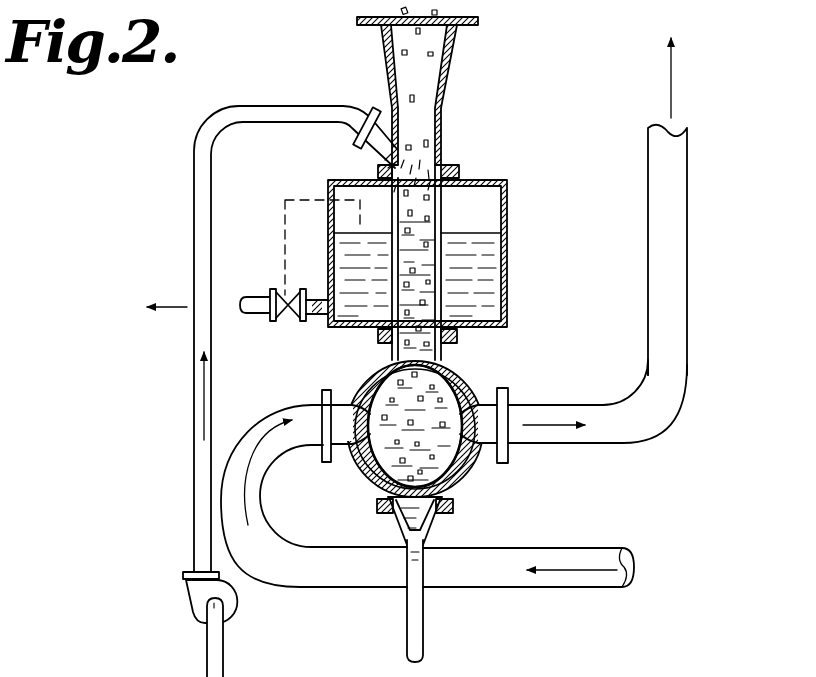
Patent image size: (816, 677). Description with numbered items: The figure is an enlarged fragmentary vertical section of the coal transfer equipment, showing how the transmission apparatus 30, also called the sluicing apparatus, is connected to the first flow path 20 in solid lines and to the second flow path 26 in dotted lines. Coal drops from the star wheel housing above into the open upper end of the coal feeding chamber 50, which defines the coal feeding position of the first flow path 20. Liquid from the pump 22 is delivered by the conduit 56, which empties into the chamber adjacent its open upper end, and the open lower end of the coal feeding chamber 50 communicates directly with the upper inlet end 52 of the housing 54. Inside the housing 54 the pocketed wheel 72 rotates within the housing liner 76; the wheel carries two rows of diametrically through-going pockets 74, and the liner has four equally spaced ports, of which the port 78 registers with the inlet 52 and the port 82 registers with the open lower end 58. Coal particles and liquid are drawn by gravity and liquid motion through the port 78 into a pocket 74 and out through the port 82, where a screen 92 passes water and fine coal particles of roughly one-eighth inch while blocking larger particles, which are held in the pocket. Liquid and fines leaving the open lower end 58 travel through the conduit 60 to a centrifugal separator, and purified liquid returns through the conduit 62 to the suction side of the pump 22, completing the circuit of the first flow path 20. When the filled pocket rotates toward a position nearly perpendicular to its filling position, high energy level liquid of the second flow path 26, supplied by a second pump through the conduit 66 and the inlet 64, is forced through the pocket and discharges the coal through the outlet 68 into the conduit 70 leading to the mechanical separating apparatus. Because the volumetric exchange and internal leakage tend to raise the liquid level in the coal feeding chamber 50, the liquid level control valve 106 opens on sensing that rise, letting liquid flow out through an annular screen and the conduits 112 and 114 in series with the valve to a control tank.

The first flow path 20 is at (192, 243).
The pump 22 is at (196, 604).
The second flow path 26 is at (690, 231).
The transmission apparatus 30 is at (475, 366).
The coal feeding chamber 50 is at (508, 184).
The upper inlet end 52 is at (378, 338).
The housing 54 is at (455, 504).
The conduit 56 is at (216, 172).
The open lower end 58 is at (393, 500).
The conduit 60 is at (418, 560).
The conduit 62 is at (201, 616).
The inlet 64 is at (352, 405).
The conduit 66 is at (266, 520).
The outlet 68 is at (508, 396).
The conduit 70 is at (613, 443).
The pocketed wheel 72 is at (345, 420).
The pockets 74 is at (358, 460).
The housing liner 76 is at (504, 460).
The port 78 is at (457, 352).
The port 82 is at (528, 552).
The screen 92 is at (403, 533).
The liquid level control valve 106 is at (285, 290).
The conduit 112 is at (315, 322).
The conduit 114 is at (255, 313).